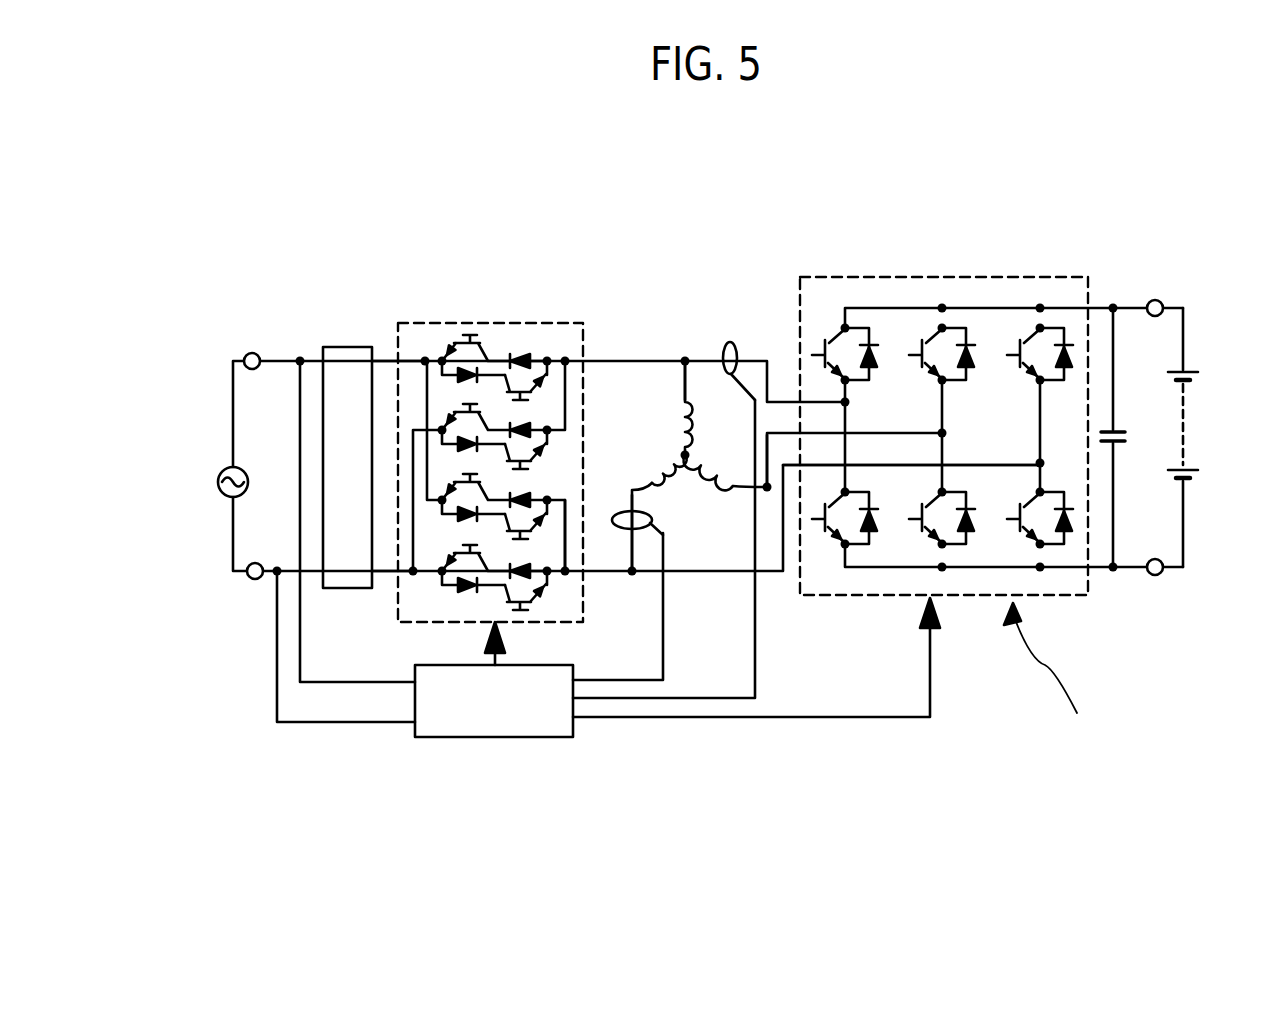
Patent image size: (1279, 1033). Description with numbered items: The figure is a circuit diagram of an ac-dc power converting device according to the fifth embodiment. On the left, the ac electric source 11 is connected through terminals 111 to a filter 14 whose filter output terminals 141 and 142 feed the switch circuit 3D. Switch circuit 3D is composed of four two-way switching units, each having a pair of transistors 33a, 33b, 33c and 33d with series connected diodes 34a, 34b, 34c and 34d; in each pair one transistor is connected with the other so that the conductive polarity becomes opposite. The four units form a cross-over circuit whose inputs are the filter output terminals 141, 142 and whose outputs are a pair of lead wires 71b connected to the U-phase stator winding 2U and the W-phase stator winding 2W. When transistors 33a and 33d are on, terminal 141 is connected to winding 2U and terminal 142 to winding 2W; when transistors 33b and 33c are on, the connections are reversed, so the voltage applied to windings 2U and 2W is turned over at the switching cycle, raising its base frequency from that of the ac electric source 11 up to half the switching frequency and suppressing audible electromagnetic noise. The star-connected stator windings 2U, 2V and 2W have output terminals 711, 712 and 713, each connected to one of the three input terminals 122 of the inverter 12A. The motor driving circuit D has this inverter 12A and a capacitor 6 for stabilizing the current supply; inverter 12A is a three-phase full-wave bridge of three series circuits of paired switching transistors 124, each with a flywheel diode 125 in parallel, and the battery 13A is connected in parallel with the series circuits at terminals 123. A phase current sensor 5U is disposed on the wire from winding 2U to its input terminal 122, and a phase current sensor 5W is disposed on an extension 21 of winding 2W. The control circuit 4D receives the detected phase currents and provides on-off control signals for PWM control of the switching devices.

The ac electric source 11 is at (228, 497).
The input terminals 111 is at (207, 660).
The filter 14 is at (330, 347).
The filter output terminal 141 is at (372, 347).
The filter output terminal 142 is at (393, 577).
The switch circuit 3D is at (477, 323).
The transistor 33a is at (460, 343).
The transistor 33b is at (457, 414).
The transistor 33c is at (457, 496).
The transistor 33d is at (455, 556).
The series connected diode 34a is at (522, 354).
The series connected diode 34b is at (533, 424).
The series connected diode 34c is at (533, 492).
The series connected diode 34d is at (562, 575).
The lead wires 71b is at (565, 530).
The control circuit 4D is at (490, 738).
The extension of stator winding 2W 21 is at (713, 520).
The stator winding 2U is at (680, 405).
The stator winding 2V is at (724, 482).
The stator winding 2W is at (652, 468).
The output terminal 711 is at (690, 375).
The output terminal 712 is at (632, 577).
The output terminal 713 is at (767, 492).
The phase current sensor 5U is at (740, 350).
The phase current sensor 5W is at (650, 532).
The inverter 12A is at (1017, 277).
The switching transistors 124 is at (832, 540).
The flywheel diode 125 is at (876, 524).
The input terminals 122 is at (1043, 462).
The capacitor 6 is at (1118, 428).
The DC terminals 123 is at (1152, 655).
The battery 13A is at (1190, 432).
The motor driving circuit D is at (1052, 682).